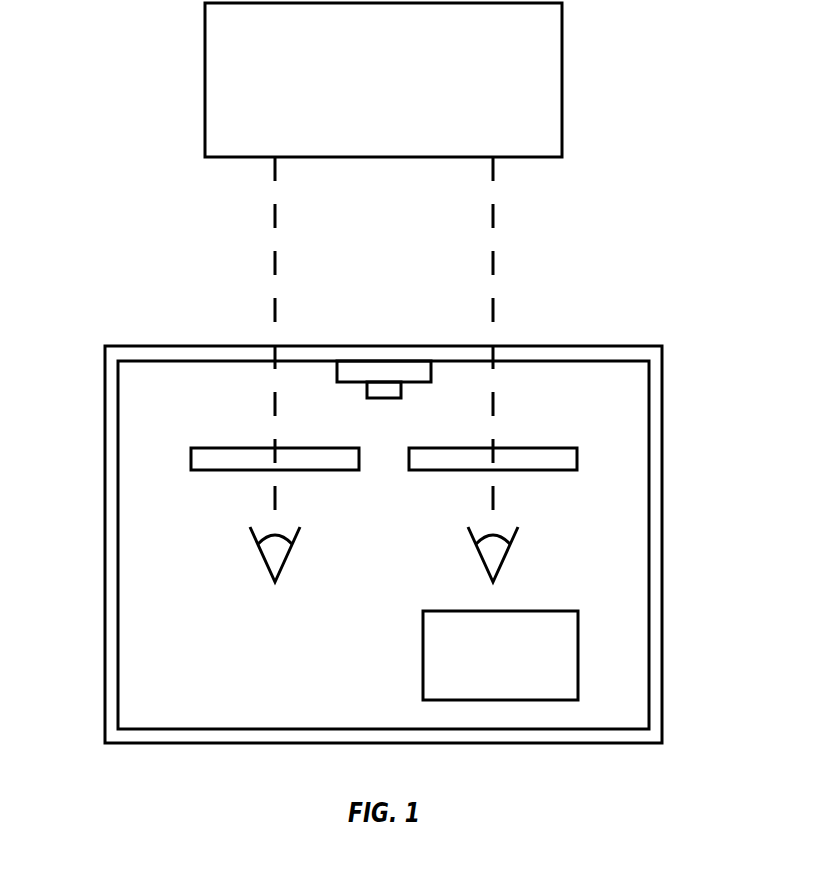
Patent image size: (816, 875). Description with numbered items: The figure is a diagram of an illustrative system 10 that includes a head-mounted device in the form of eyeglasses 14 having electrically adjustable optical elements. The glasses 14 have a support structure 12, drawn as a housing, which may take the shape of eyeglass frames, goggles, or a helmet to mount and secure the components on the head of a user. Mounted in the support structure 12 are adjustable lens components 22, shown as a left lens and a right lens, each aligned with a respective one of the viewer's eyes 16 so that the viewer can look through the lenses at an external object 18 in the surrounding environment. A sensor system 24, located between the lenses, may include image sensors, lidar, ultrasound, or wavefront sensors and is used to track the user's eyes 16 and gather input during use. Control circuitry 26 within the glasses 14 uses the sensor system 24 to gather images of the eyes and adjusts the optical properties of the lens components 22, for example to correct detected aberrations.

The system 10 is at (698, 747).
The support structure 12 is at (104, 432).
The eyeglasses 14 is at (622, 306).
The eyes 16 is at (288, 553).
The external object 18 is at (562, 80).
The adjustable lens components 22 is at (191, 460).
The sensor system 24 is at (431, 370).
The control circuitry 26 is at (423, 658).